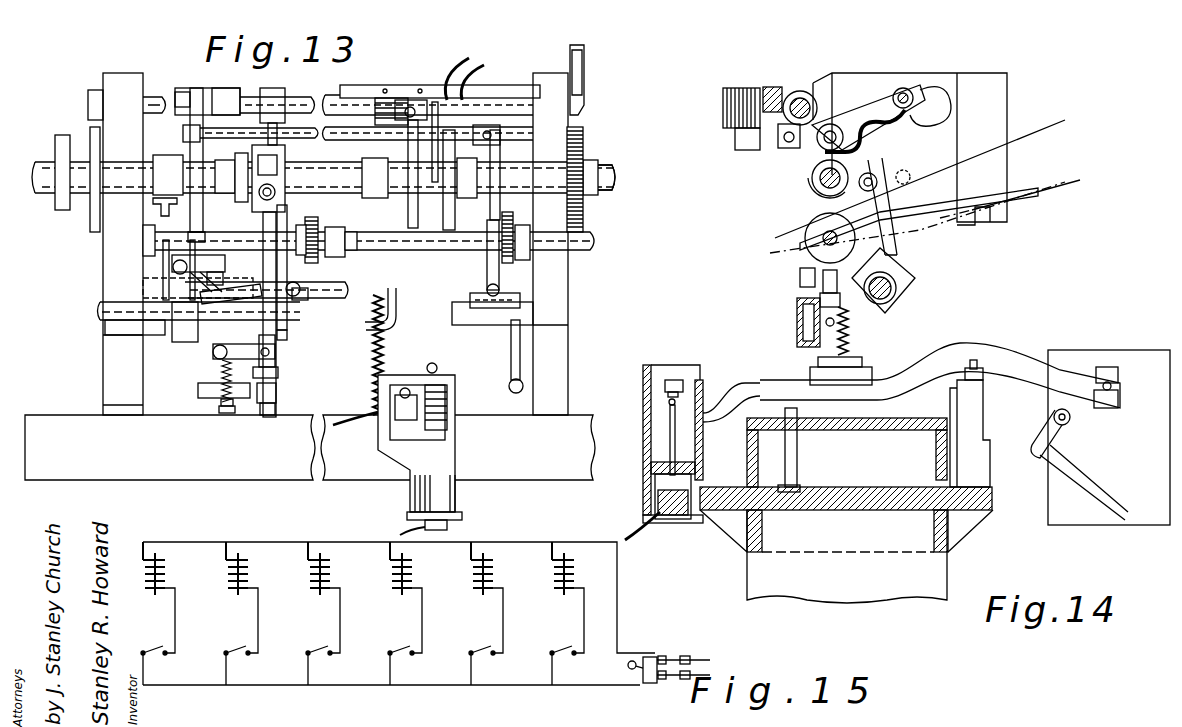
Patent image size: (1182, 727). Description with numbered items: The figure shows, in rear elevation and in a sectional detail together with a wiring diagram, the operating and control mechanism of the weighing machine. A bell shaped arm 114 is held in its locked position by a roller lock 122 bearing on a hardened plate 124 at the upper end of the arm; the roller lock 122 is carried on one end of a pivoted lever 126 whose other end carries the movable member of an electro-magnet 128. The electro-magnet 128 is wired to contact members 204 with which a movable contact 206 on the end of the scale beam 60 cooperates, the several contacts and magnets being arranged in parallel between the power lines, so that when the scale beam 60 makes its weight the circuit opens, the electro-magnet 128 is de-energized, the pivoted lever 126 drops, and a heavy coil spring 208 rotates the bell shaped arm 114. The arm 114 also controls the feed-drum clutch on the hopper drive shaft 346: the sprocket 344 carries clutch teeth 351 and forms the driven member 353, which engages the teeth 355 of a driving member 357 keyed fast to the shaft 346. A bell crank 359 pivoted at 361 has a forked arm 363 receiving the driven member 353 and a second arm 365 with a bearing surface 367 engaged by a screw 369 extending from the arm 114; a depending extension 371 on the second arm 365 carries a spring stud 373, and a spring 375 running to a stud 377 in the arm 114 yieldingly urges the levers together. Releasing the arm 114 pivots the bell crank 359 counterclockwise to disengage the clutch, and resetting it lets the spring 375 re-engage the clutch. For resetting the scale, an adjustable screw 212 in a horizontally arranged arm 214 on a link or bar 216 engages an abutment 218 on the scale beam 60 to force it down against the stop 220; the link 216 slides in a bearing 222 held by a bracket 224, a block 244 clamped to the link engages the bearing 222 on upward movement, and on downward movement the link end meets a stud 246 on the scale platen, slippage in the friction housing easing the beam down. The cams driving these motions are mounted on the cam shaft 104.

In FIG. 14, the scale beam 60 is at (985, 343).
In FIG. 13, the cam shaft 104 is at (612, 172).
In FIG. 14, the cam shaft 104 is at (830, 212).
In FIG. 13, the bell shaped arm 114 is at (413, 197).
In FIG. 14, the bell shaped arm 114 is at (950, 236).
In FIG. 14, the roller lock 122 is at (835, 90).
In FIG. 14, the hardened plate 124 is at (813, 198).
In FIG. 14, the pivoted lever 126 is at (783, 155).
In FIG. 14, the electro-magnet 128 is at (722, 108).
In FIG. 15, the electro-magnet 128 is at (415, 560).
In FIG. 13, the contact members 204 is at (443, 392).
In FIG. 14, the contact members 204 is at (672, 403).
In FIG. 15, the contact members 204 is at (408, 650).
In FIG. 13, the movable contact 206 is at (440, 413).
In FIG. 14, the movable contact 206 is at (672, 410).
In FIG. 15, the movable contact 206 is at (407, 645).
In FIG. 14, the spring 208 is at (745, 150).
In FIG. 13, the adjustable screw 212 is at (220, 360).
In FIG. 13, the horizontally arranged arm 214 is at (240, 360).
In FIG. 13, the link or bar 216 is at (275, 348).
In FIG. 13, the abutment 218 is at (215, 392).
In FIG. 13, the stop 220 is at (225, 412).
In FIG. 13, the bearing 222 is at (280, 375).
In FIG. 13, the bracket 224 is at (280, 335).
In FIG. 13, the block 244 is at (280, 397).
In FIG. 13, the stud 246 is at (275, 412).
In FIG. 13, the sprocket 344 is at (590, 170).
In FIG. 14, the sprocket 344 is at (826, 243).
In FIG. 13, the hopper drive shaft 346 is at (576, 246).
In FIG. 14, the hopper drive shaft 346 is at (800, 262).
In FIG. 13, the clutch teeth 351 is at (325, 217).
In FIG. 13, the driven member 353 is at (515, 268).
In FIG. 13, the teeth 355 is at (337, 228).
In FIG. 13, the driving member 357 is at (328, 250).
In FIG. 13, the bell crank 359 is at (492, 292).
In FIG. 13, the pivot 361 is at (295, 300).
In FIG. 13, the forked arm 363 is at (300, 295).
In FIG. 13, the second arm 365 is at (150, 345).
In FIG. 13, the bearing surface 367 is at (100, 312).
In FIG. 13, the screw 369 is at (240, 285).
In FIG. 13, the depending extension 371 is at (452, 345).
In FIG. 13, the spring stud 373 is at (372, 350).
In FIG. 13, the spring 375 is at (390, 328).
In FIG. 13, the stud 377 is at (490, 280).